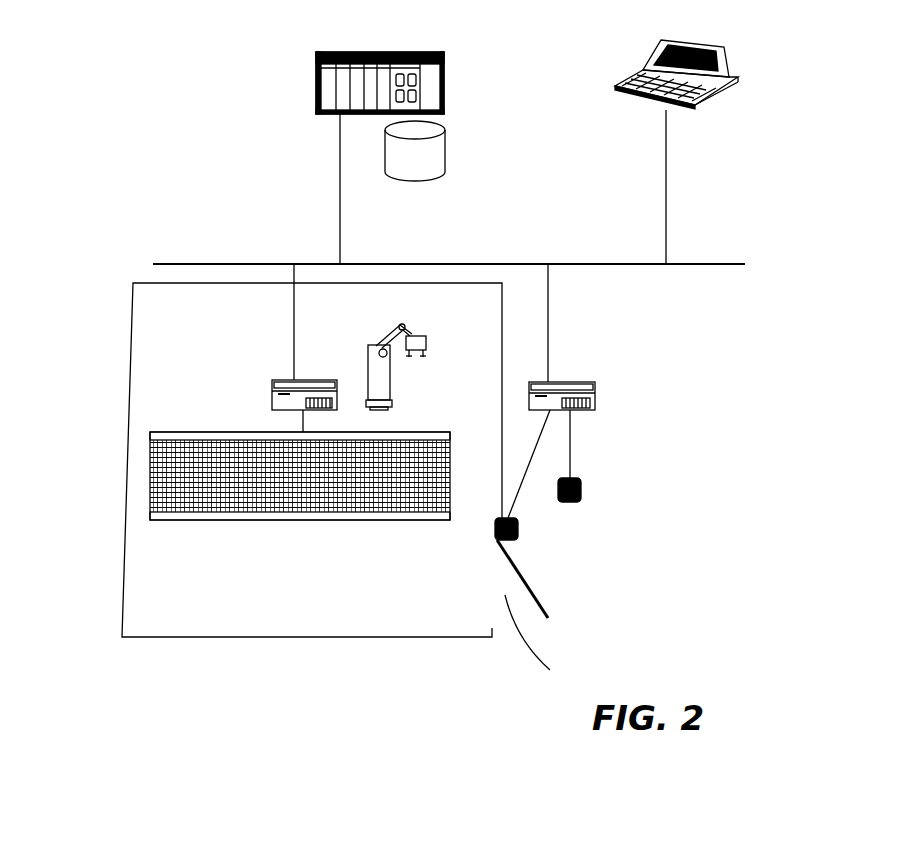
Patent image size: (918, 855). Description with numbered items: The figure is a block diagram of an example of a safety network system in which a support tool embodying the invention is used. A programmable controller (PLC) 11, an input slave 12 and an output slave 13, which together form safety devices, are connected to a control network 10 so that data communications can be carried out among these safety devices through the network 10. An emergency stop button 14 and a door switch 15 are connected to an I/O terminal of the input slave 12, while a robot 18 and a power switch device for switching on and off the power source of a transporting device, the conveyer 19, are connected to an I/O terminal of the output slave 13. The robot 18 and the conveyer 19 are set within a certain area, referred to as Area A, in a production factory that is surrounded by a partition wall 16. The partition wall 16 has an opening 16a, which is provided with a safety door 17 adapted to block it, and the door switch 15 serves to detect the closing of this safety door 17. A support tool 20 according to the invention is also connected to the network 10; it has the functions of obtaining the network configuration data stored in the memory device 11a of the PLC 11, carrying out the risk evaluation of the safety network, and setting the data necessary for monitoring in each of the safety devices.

The control network 10 is at (590, 262).
The programmable controller (PLC) 11 is at (444, 83).
The memory device 11a is at (445, 147).
The input slave 12 is at (596, 393).
The output slave 13 is at (272, 396).
The emergency stop button 14 is at (577, 478).
The door switch 15 is at (518, 528).
The partition wall 16 is at (125, 540).
The opening 16a is at (550, 638).
The safety door 17 is at (525, 578).
The robot 18 is at (368, 350).
The conveyer 19 is at (218, 520).
The support tool 20 is at (650, 56).